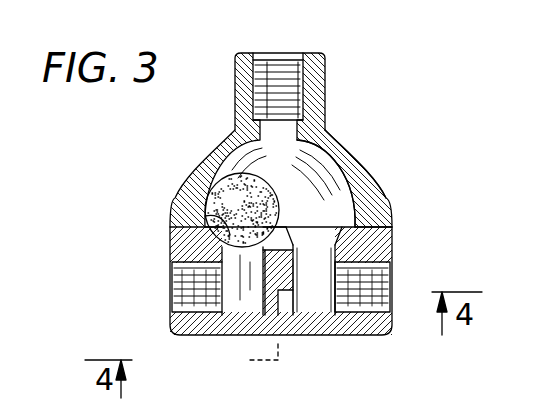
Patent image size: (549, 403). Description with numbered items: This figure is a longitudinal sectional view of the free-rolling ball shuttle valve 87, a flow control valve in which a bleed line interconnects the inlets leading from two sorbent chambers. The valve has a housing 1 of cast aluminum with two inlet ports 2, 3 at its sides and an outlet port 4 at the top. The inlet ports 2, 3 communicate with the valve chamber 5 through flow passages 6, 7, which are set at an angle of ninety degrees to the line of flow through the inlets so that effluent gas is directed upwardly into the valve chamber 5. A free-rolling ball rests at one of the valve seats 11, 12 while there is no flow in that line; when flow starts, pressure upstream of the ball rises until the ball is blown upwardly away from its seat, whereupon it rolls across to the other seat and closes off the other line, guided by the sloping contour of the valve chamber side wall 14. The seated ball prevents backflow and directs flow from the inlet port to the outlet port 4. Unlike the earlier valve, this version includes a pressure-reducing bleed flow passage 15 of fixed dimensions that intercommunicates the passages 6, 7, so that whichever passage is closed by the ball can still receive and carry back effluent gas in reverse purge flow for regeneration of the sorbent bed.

The housing 1 is at (202, 150).
The inlet port 2 is at (170, 280).
The inlet port 3 is at (386, 272).
The outlet port 4 is at (293, 62).
The valve chamber 5 is at (297, 178).
The flow passage 6 is at (238, 332).
The flow passage 7 is at (308, 333).
The valve seat 11 is at (205, 216).
The valve seat 12 is at (340, 228).
The valve chamber side wall 14 is at (333, 173).
The bleed flow passage 15 is at (285, 233).
The free-rolling ball shuttle valve 87 is at (345, 135).